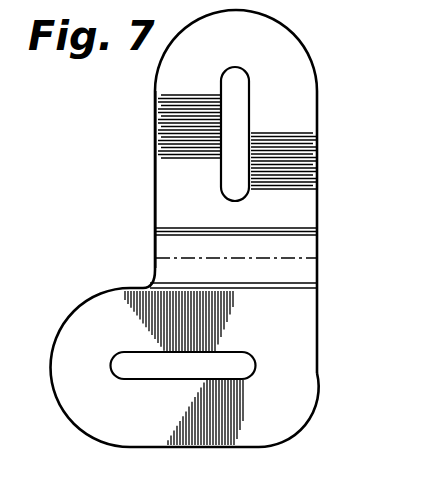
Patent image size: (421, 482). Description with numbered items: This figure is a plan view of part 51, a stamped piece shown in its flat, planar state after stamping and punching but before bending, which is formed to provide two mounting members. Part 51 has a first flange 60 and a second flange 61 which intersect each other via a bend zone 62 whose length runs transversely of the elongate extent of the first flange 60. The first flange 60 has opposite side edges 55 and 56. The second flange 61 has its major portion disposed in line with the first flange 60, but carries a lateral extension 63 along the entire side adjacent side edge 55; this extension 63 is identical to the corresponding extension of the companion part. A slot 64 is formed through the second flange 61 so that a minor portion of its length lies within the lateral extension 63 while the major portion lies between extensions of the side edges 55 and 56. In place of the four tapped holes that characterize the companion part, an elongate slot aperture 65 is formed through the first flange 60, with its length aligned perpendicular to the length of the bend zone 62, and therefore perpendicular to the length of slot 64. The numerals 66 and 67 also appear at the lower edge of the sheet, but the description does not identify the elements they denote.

The part 51 is at (155, 150).
The side edge 55 is at (153, 187).
The side edge 56 is at (318, 228).
The first flange 60 is at (306, 110).
The second flange 61 is at (318, 370).
The bend zone 62 is at (293, 237).
The lateral extension 63 is at (100, 308).
The slot 64 is at (170, 368).
The elongate slot aperture 65 is at (252, 158).
The tab 66 is at (375, 470).
The tab 67 is at (350, 480).